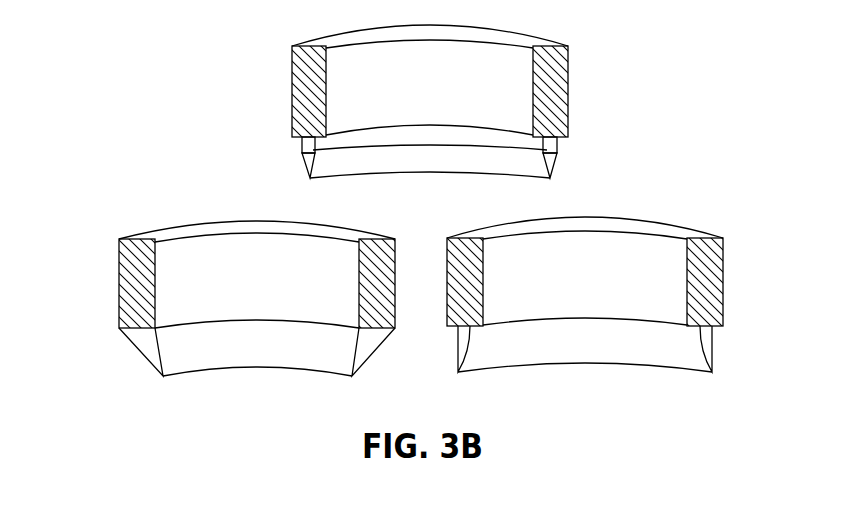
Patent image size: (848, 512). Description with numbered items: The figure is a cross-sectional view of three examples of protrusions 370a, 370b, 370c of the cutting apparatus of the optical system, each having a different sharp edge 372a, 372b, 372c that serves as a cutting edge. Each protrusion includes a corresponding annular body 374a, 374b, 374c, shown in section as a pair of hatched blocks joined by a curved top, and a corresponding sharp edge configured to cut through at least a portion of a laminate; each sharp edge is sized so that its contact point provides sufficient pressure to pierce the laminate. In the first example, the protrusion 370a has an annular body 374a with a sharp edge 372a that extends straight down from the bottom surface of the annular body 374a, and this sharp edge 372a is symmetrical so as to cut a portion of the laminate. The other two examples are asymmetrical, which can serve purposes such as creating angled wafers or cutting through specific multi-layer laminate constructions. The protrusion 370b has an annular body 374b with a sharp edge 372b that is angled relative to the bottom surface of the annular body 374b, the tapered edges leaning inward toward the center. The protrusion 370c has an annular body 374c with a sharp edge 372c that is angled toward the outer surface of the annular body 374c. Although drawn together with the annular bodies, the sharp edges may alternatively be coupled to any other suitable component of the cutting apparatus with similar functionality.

The protrusion 370a is at (472, 105).
The annular body 374a is at (568, 88).
The sharp edge 372a is at (560, 170).
The protrusion 370b is at (214, 303).
The annular body 374b is at (119, 288).
The sharp edge 372b is at (170, 382).
The protrusion 370c is at (627, 294).
The annular body 374c is at (723, 278).
The sharp edge 372c is at (713, 347).